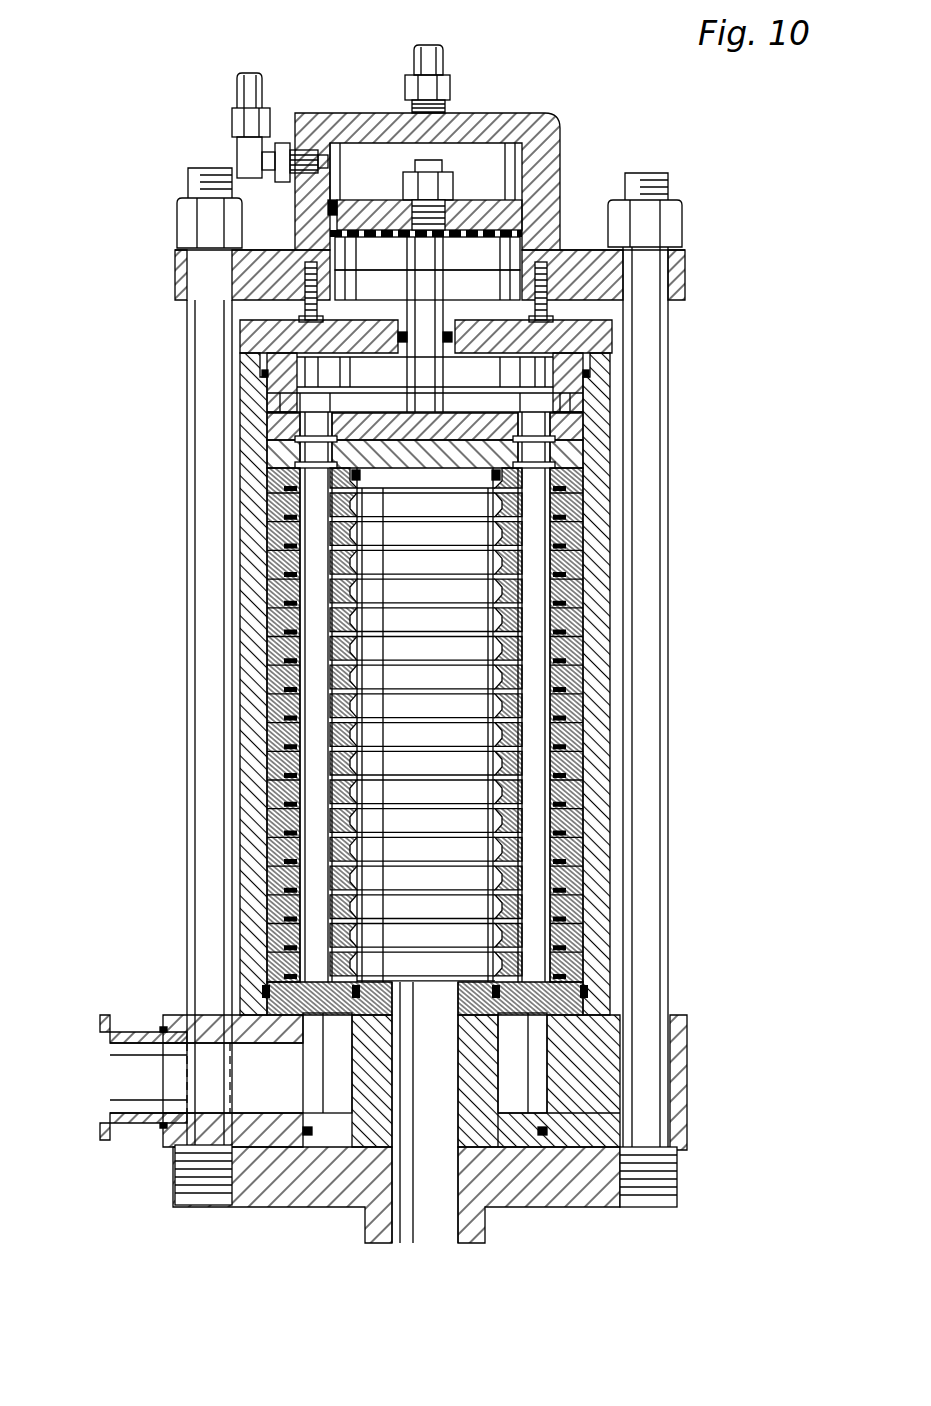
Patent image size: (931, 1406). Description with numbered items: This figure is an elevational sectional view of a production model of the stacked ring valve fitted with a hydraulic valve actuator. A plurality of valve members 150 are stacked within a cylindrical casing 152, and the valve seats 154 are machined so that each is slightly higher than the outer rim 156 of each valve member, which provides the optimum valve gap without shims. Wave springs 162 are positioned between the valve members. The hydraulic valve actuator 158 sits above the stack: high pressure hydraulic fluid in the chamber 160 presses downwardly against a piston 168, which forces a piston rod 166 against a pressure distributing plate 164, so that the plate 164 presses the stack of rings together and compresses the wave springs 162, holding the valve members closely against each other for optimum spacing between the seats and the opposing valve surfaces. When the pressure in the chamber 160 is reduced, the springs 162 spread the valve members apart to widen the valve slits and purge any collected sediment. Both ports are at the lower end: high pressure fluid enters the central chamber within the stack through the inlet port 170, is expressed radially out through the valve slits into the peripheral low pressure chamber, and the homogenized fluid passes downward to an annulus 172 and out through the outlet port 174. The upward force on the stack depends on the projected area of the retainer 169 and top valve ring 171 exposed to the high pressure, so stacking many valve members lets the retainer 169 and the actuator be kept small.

The valve members 150 is at (582, 678).
The cylindrical casing 152 is at (610, 735).
The valve seats 154 is at (265, 637).
The outer rim 156 is at (265, 538).
The hydraulic valve actuator 158 is at (218, 125).
The chamber 160 is at (498, 178).
The wave springs 162 is at (585, 578).
The pressure distributing plate 164 is at (572, 427).
The piston rod 166 is at (290, 403).
The piston 168 is at (353, 250).
The retainer 169 is at (572, 455).
The inlet port 170 is at (415, 1210).
The top valve ring 171 is at (572, 480).
The annulus 172 is at (525, 1070).
The outlet port 174 is at (137, 1093).